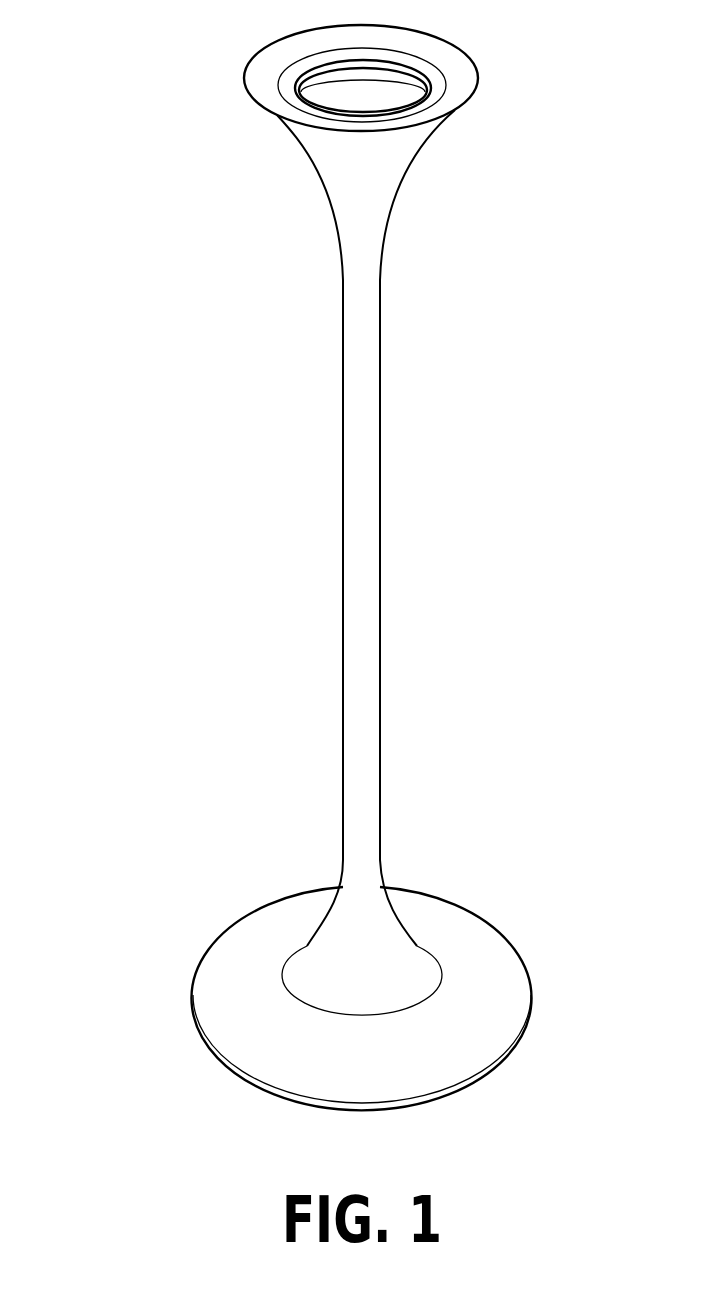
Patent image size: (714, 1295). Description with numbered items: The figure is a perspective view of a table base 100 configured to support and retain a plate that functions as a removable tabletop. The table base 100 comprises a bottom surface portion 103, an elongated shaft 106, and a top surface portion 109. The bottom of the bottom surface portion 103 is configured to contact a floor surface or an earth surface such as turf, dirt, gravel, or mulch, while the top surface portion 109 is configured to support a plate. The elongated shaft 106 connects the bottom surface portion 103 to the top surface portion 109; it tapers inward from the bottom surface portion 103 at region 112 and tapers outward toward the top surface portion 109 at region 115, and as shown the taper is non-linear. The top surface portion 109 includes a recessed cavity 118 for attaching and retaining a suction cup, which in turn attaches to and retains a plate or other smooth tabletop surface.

The table base 100 is at (114, 1021).
The bottom surface portion 103 is at (485, 997).
The elongated shaft 106 is at (363, 397).
The top surface portion 109 is at (455, 73).
The region 112 is at (380, 922).
The region 115 is at (377, 172).
The recessed cavity 118 is at (353, 97).